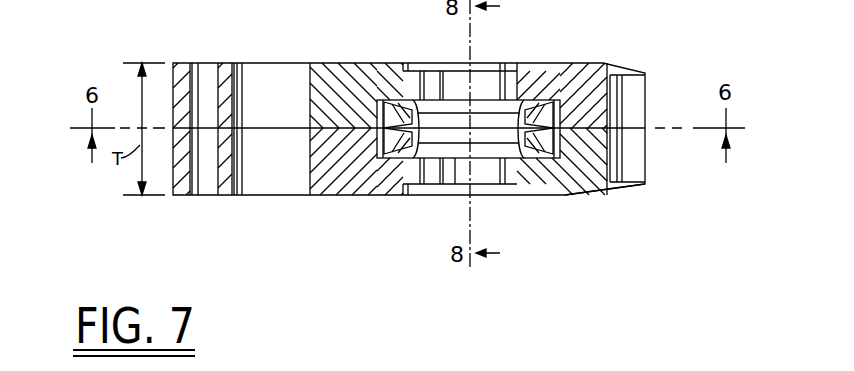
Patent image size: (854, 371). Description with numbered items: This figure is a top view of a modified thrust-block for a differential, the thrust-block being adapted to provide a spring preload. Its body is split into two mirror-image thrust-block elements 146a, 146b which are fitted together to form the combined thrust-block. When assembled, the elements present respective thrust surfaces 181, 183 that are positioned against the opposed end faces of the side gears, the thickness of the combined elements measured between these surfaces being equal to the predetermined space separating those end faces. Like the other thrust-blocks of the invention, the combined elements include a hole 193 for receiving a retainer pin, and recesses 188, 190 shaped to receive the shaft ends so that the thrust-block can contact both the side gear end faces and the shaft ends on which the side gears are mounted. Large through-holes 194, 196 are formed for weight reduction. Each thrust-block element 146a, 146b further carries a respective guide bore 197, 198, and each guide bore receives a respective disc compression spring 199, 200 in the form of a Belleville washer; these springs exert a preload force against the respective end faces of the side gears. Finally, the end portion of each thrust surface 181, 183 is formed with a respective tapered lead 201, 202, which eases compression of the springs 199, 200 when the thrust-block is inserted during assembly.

The thrust-block element 146a is at (222, 80).
The thrust-block element 146b is at (312, 167).
The thrust surface 181 is at (356, 62).
The thrust surface 183 is at (352, 190).
The recess 188 is at (498, 70).
The recess 190 is at (458, 188).
The hole 193 is at (210, 187).
The through-hole 194 is at (305, 88).
The through-hole 196 is at (503, 137).
The guide bore 197 is at (430, 98).
The guide bore 198 is at (392, 185).
The disc compression spring 199 is at (565, 100).
The disc compression spring 200 is at (491, 190).
The tapered lead 201 is at (610, 63).
The tapered lead 202 is at (586, 192).